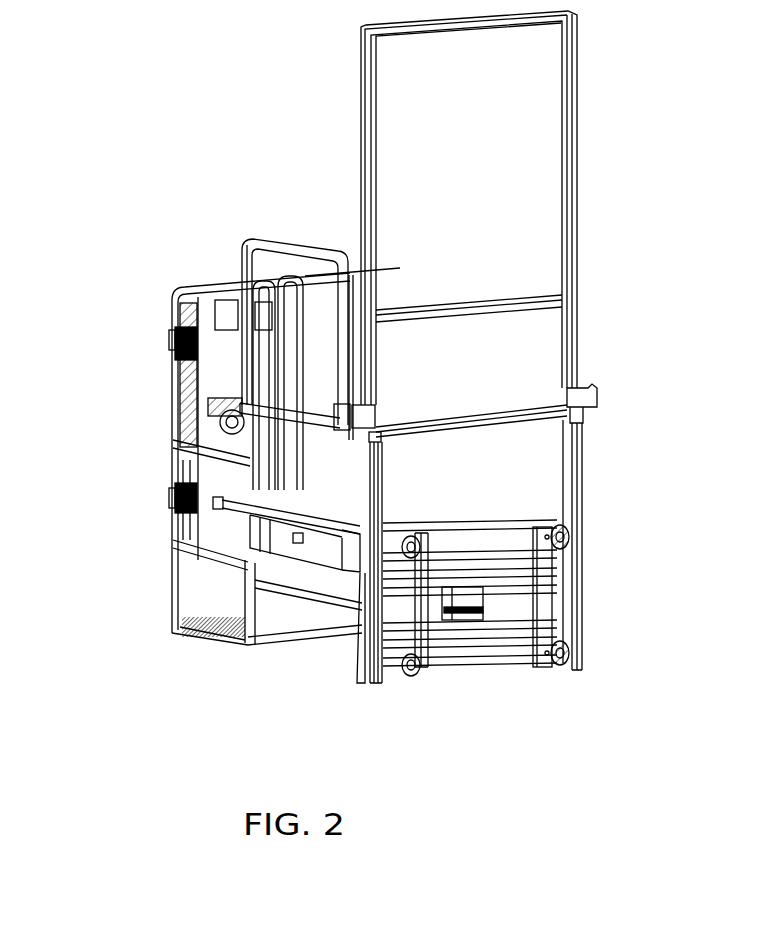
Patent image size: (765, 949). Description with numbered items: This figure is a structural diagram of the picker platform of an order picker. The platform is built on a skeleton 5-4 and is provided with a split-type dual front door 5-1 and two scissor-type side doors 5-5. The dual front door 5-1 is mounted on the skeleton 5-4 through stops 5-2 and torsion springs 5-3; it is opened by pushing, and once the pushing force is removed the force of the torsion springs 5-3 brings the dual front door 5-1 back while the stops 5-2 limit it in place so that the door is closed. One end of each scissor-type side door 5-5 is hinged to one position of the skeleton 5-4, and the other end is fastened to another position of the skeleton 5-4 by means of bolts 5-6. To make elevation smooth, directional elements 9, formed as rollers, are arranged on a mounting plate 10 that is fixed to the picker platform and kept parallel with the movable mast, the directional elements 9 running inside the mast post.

The split-type dual front door 5-1 is at (222, 282).
The stop 5-2 is at (167, 336).
The torsion spring 5-3 is at (178, 353).
The skeleton 5-4 is at (177, 427).
The scissor-type side door 5-5 is at (345, 322).
The bolt 5-6 is at (222, 400).
The directional element 9 is at (563, 542).
The mounting plate 10 is at (550, 614).